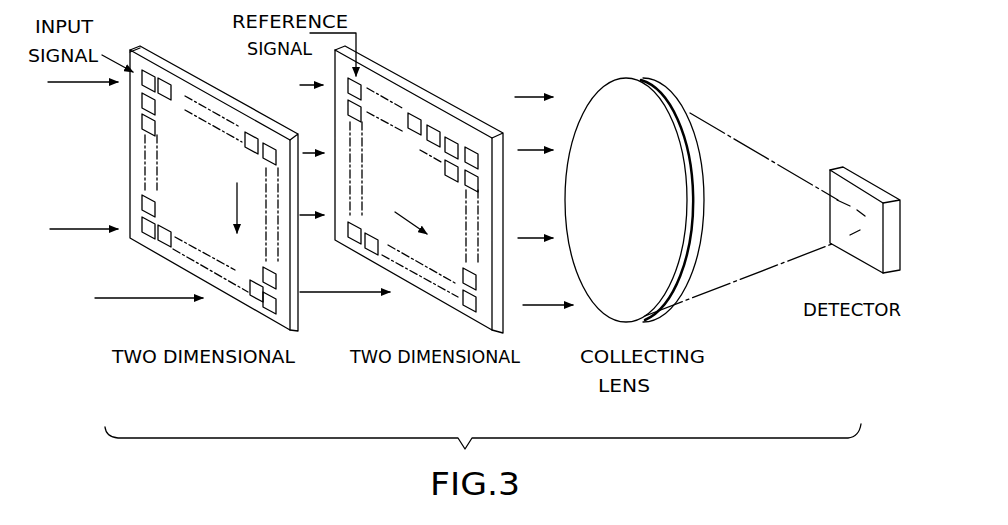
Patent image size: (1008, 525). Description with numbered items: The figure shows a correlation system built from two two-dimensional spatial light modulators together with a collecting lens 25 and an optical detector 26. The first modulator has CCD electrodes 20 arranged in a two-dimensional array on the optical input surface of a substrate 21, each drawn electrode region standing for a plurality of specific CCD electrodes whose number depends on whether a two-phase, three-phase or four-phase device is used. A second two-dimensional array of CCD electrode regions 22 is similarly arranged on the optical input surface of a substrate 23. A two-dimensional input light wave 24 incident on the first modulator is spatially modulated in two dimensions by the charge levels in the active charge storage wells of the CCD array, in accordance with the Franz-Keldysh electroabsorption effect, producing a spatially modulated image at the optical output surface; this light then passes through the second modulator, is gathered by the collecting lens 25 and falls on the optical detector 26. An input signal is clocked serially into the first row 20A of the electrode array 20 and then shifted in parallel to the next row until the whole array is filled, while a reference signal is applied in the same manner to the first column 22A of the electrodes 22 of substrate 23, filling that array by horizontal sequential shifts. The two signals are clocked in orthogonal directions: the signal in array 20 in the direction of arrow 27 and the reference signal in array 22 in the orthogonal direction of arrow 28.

The CCD electrodes 20 is at (209, 192).
The first row 20A is at (175, 103).
The substrate 21 is at (211, 207).
The CCD electrode regions 22 is at (433, 143).
The first column 22A is at (355, 236).
The substrate 23 is at (407, 221).
The input light wave 24 is at (115, 190).
The collecting lens 25 is at (657, 88).
The optical detector 26 is at (878, 193).
The arrow 27 is at (236, 212).
The arrow 28 is at (395, 212).